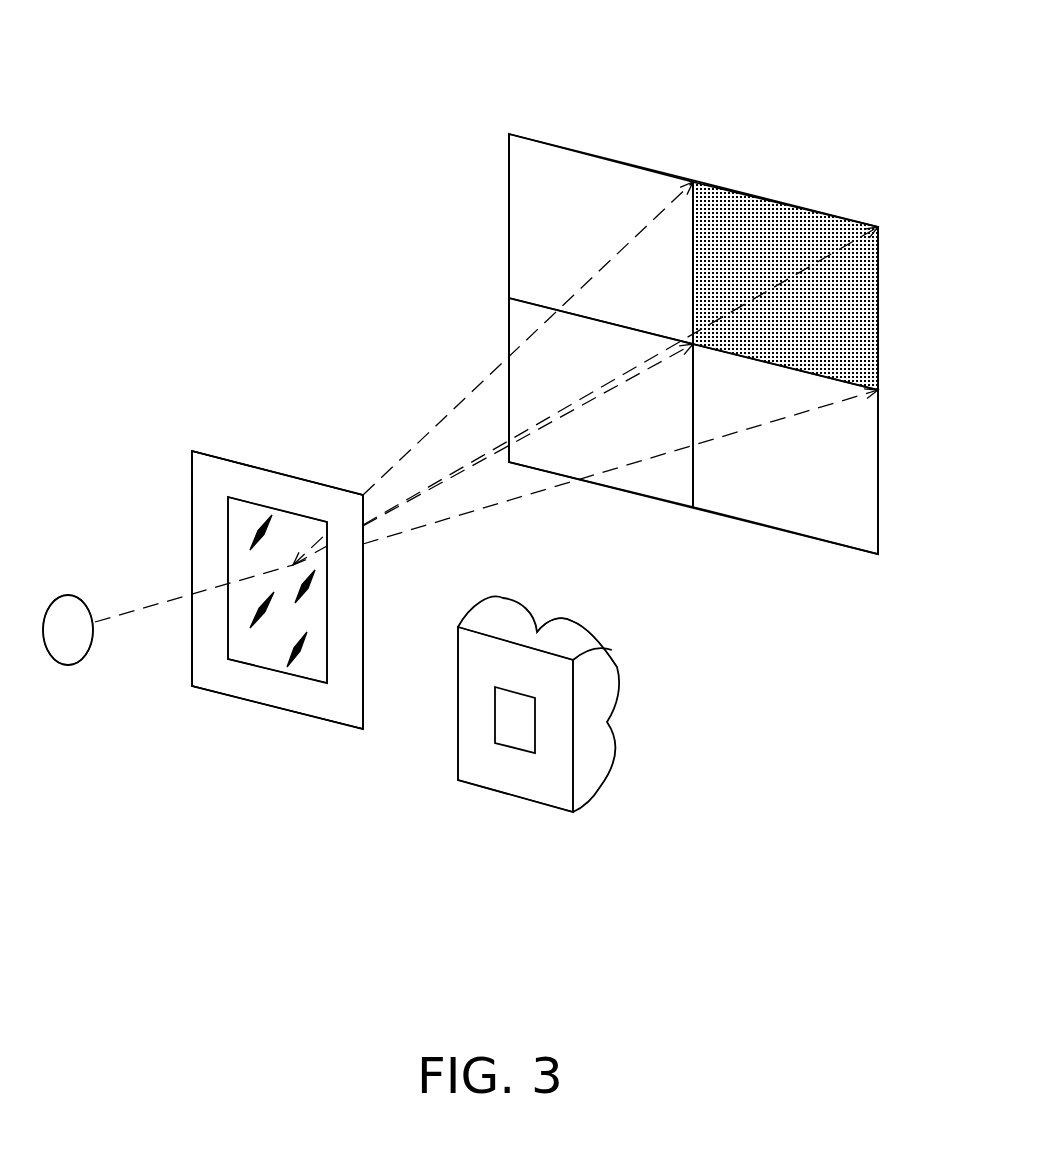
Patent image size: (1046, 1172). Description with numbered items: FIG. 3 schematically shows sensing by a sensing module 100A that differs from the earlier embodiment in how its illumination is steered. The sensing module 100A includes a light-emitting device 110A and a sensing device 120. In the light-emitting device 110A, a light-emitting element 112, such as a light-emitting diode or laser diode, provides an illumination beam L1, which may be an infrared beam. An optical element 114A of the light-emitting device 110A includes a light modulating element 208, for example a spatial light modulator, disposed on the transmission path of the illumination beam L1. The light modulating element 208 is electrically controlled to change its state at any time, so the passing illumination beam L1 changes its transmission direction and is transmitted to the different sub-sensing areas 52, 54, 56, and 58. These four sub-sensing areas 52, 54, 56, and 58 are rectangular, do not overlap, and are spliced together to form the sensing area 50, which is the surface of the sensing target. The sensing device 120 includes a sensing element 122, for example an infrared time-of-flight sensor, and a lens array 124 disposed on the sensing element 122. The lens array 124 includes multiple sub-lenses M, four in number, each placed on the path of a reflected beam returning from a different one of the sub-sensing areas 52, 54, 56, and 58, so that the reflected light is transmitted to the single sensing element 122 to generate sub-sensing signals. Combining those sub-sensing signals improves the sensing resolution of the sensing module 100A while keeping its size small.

The sensing area 50 is at (478, 100).
The sub-sensing area 52 is at (522, 197).
The sub-sensing area 54 is at (862, 288).
The sub-sensing area 56 is at (862, 468).
The sub-sensing area 58 is at (525, 318).
The illumination beam L1 is at (548, 488).
The sensing module 100A is at (168, 97).
The light-emitting device 110A is at (310, 827).
The light-emitting element 112 is at (73, 652).
The light modulating element 208 is at (276, 697).
The optical element 114A is at (277, 590).
The sensing device 120 is at (425, 541).
The sensing element 122 is at (522, 742).
The lens array 124 is at (590, 778).
The sub-lens M is at (597, 642).